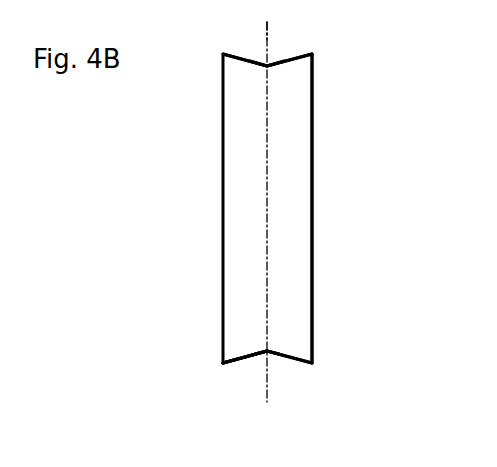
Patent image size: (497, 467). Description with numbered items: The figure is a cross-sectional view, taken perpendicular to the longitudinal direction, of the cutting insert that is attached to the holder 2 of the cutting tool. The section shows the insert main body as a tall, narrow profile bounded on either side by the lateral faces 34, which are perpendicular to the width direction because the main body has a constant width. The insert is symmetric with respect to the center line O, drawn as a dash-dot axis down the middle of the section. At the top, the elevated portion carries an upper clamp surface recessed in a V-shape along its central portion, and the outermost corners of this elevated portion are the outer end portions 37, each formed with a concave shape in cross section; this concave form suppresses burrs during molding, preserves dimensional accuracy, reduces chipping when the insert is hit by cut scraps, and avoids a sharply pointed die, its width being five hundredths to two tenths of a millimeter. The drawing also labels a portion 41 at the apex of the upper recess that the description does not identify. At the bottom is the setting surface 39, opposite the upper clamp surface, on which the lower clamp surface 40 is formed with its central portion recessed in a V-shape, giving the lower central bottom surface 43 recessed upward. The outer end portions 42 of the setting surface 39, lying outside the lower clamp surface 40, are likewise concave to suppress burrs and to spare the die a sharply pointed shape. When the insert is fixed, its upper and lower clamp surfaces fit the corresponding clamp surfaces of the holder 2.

The holder 2 is at (287, 227).
The lateral faces 34 is at (313, 155).
The outer end portions 37 is at (233, 53).
The upper ridge line (apex) 41 is at (266, 66).
The outer end portions 42 is at (222, 365).
The lower central bottom surface 43 is at (268, 355).
The lower clamp surface 40 is at (238, 367).
The setting surface 39 is at (245, 357).
The center line O is at (269, 20).